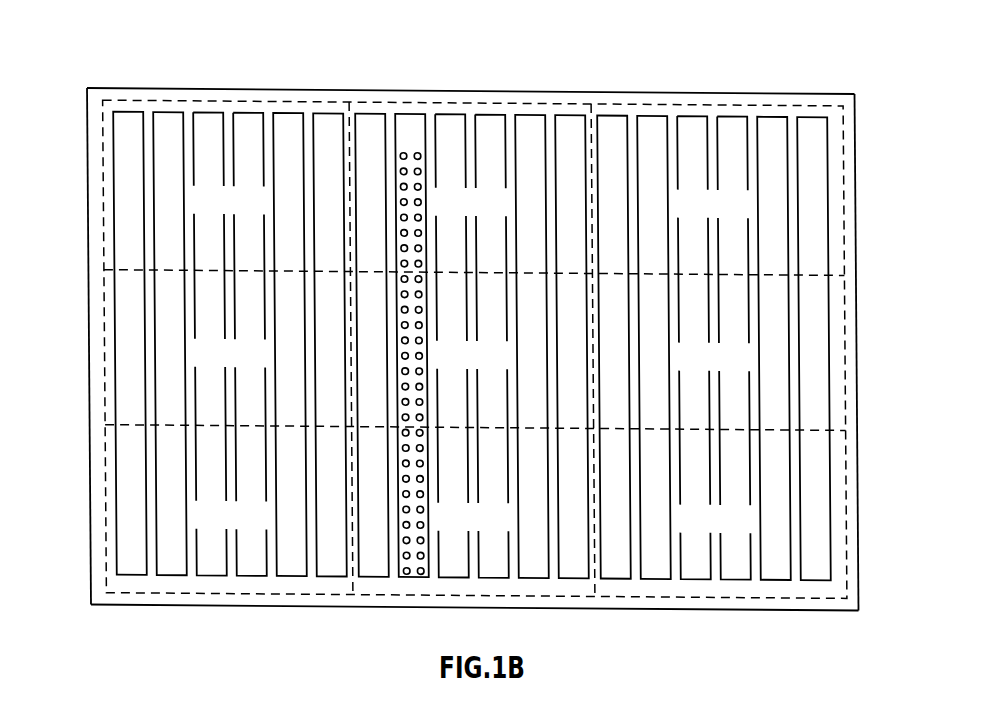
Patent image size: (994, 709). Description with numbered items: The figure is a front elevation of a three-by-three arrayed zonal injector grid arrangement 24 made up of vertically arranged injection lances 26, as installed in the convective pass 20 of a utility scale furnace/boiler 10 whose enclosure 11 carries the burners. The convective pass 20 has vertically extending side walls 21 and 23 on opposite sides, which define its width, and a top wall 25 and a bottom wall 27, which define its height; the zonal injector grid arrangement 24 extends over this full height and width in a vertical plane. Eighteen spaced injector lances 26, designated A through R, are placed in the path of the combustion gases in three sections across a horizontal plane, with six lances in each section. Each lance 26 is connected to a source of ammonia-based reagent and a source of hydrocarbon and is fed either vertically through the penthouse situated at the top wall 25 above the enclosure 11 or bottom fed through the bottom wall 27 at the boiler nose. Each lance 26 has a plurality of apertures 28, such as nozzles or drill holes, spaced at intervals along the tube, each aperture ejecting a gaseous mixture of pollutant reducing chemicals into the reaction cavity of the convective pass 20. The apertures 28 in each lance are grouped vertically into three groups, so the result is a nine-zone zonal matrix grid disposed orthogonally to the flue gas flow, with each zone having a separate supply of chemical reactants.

The furnace/boiler 10 is at (84, 359).
The enclosure 11 is at (87, 207).
The convective pass 20 is at (853, 310).
The side wall 21 is at (88, 473).
The side wall 23 is at (856, 267).
The zonal injector grid arrangement 24 is at (580, 100).
The top wall 25 is at (344, 92).
The injector lances 26 is at (324, 112).
The bottom wall 27 is at (618, 610).
The apertures 28 is at (418, 572).